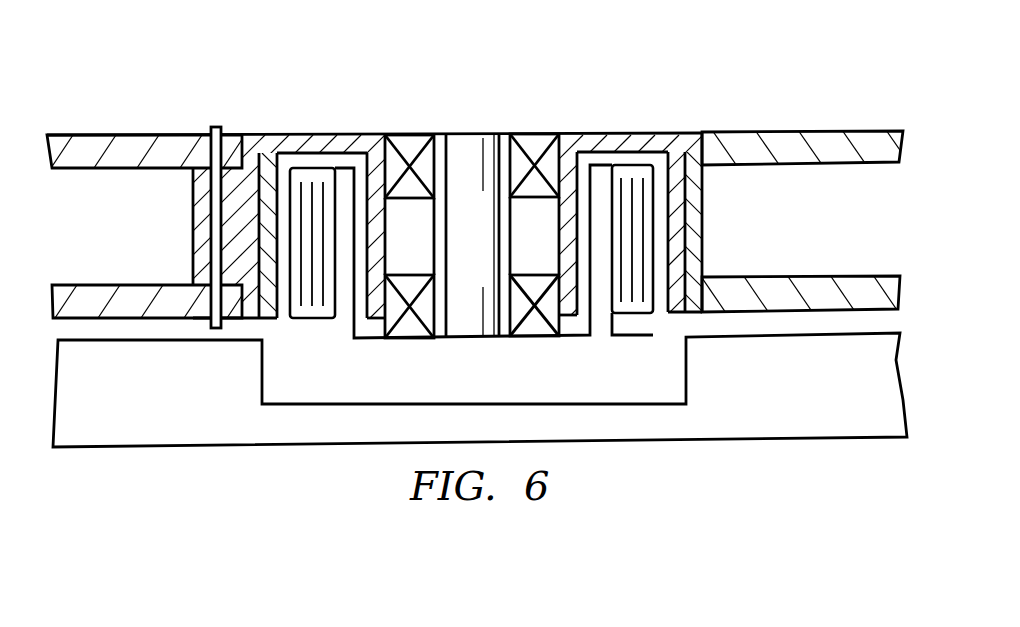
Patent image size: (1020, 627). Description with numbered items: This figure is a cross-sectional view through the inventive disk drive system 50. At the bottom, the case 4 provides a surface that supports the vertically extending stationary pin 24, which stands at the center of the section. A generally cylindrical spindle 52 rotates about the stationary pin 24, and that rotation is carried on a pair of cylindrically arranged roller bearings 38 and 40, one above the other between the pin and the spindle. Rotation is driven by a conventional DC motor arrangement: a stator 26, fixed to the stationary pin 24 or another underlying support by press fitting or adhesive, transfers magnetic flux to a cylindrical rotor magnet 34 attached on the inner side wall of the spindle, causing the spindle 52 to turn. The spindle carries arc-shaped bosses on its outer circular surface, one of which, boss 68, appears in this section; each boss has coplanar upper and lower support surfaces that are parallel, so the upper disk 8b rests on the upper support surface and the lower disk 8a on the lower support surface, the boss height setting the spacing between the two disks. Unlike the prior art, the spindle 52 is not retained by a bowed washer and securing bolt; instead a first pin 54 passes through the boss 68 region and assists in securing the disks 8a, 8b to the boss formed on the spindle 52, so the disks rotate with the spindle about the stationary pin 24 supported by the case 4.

The case 4 is at (808, 394).
The lower disk 8a is at (476, 274).
The upper disk 8b is at (479, 123).
The stationary pin 24 is at (487, 251).
The stator 26 is at (471, 203).
The rotor magnet 34 is at (475, 274).
The roller bearing 38 is at (472, 204).
The roller bearing 40 is at (472, 330).
The disk drive system 50 is at (443, 197).
The spindle 52 is at (462, 204).
The first pin 54 is at (204, 201).
The arc-shaped boss 68 is at (209, 226).